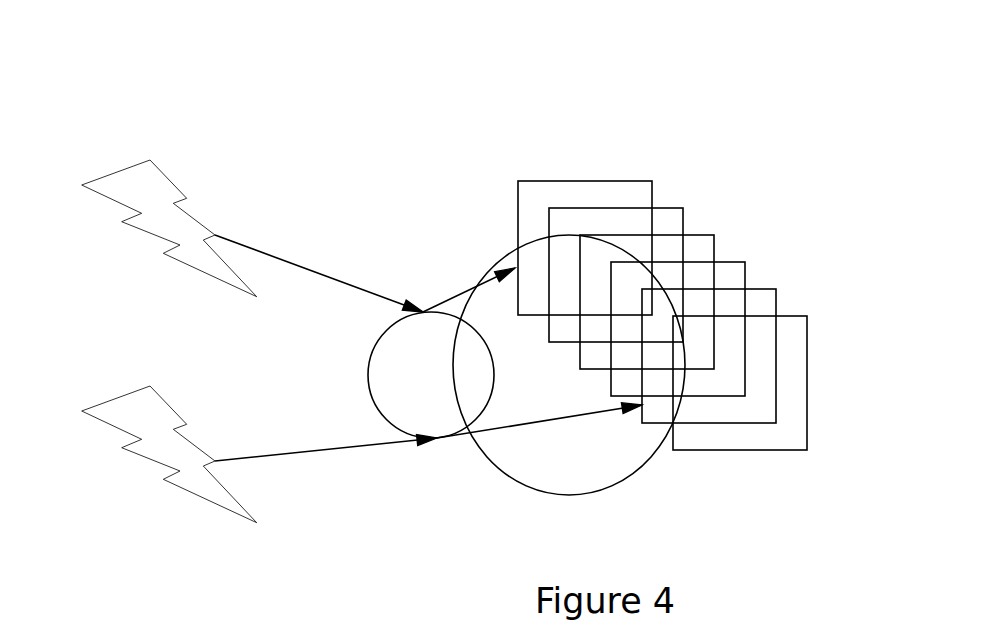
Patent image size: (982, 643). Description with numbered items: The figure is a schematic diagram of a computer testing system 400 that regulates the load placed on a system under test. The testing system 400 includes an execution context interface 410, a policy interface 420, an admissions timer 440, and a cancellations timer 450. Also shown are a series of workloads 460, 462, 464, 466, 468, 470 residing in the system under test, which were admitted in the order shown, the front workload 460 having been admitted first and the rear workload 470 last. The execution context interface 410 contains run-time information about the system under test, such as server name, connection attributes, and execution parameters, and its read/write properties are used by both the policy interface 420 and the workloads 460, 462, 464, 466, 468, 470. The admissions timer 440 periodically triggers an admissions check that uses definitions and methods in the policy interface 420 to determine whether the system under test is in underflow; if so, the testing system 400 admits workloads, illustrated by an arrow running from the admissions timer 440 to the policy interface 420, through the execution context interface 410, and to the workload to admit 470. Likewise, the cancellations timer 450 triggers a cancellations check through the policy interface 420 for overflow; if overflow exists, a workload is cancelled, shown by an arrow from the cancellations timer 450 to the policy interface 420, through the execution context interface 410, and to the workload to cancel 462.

The testing system 400 is at (467, 110).
The execution context interface 410 is at (522, 478).
The policy interface 420 is at (367, 366).
The admissions timer 440 is at (165, 176).
The cancellations timer 450 is at (168, 405).
The front workload 460 is at (800, 317).
The workload to cancel 462 is at (767, 290).
The workload 464 is at (735, 263).
The workload 466 is at (702, 236).
The workload 468 is at (672, 209).
The rear workload 470 is at (642, 181).